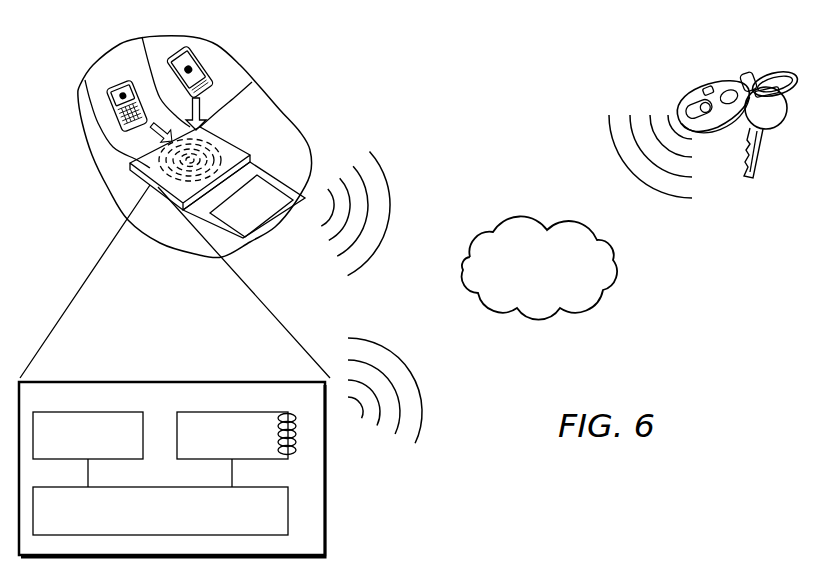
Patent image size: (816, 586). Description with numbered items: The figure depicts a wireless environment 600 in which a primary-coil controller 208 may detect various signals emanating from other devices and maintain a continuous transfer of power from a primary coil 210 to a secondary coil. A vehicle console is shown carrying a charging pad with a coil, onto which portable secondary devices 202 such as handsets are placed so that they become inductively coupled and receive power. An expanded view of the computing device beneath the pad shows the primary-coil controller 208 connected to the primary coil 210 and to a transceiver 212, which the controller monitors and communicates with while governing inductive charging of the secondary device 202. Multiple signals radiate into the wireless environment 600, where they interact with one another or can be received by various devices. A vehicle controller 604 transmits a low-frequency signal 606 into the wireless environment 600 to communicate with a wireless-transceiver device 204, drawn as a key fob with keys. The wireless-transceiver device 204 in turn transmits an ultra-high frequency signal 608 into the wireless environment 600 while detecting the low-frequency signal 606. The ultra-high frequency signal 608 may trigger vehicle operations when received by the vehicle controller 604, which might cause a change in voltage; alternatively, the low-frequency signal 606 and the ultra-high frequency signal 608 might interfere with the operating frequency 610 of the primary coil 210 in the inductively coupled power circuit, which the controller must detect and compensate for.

The secondary device 202 is at (203, 67).
The wireless-transceiver device 204 is at (696, 87).
The primary-coil controller 208 is at (289, 510).
The primary coil 210 is at (228, 412).
The transceiver 212 is at (78, 412).
The wireless environment 600 is at (528, 219).
The vehicle controller 604 is at (277, 215).
The low-frequency signal 606 is at (390, 222).
The ultra-high frequency signal 608 is at (608, 128).
The operating frequency 610 is at (390, 356).